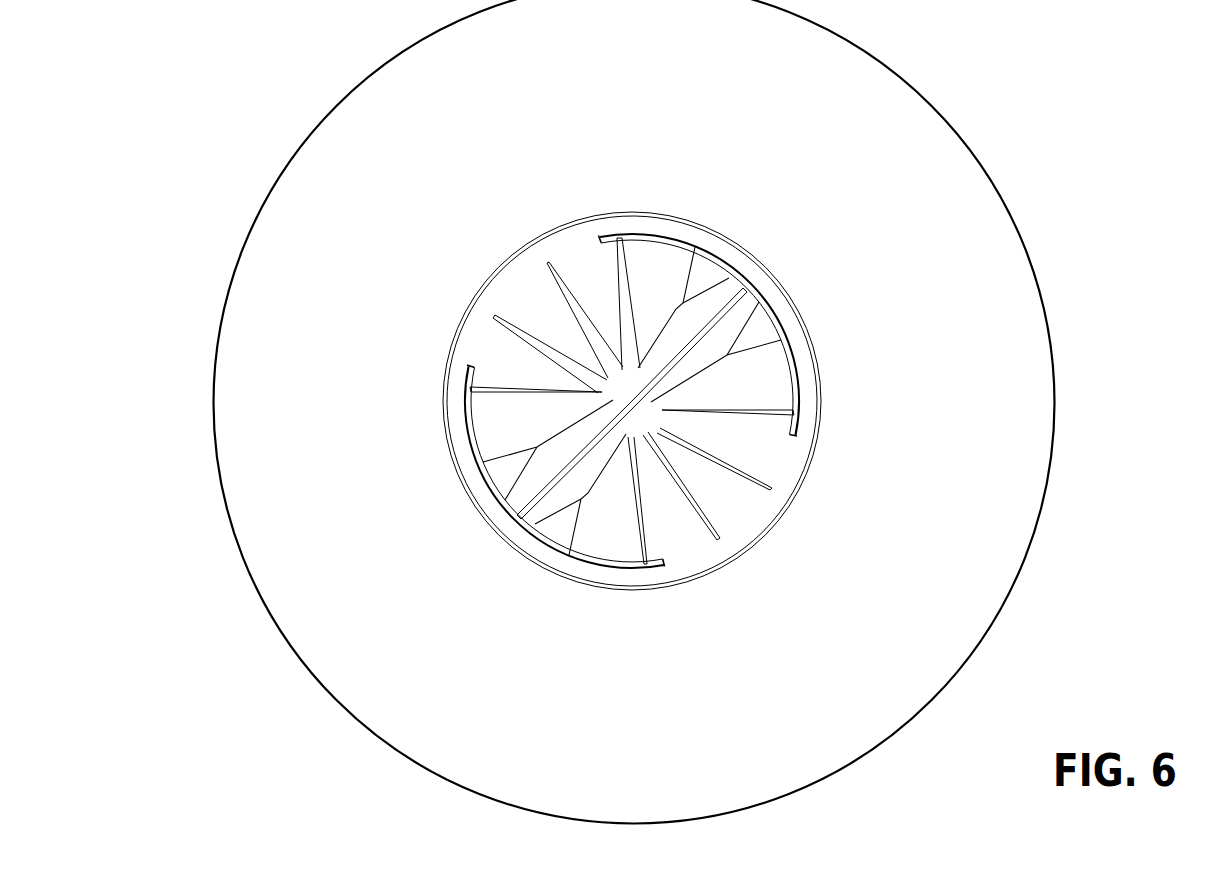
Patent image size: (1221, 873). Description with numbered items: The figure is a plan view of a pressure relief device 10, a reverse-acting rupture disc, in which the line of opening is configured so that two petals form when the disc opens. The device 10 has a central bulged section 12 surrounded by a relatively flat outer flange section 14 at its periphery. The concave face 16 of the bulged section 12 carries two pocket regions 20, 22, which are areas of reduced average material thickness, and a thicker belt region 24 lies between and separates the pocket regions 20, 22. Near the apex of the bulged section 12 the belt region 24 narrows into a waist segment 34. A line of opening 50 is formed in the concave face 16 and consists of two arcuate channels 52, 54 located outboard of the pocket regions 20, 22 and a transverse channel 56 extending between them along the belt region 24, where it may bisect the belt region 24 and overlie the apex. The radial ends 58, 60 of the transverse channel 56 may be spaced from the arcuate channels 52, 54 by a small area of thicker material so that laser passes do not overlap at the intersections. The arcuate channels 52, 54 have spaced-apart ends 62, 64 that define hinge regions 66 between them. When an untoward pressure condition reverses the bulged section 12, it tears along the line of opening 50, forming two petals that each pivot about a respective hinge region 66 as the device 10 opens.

The pressure relief device 10 is at (990, 675).
The central bulged section 12 is at (580, 247).
The outer flange section 14 is at (288, 210).
The concave face 16 is at (807, 330).
The pocket region 20 is at (556, 535).
The pocket region 22 is at (500, 483).
The belt region 24 is at (712, 300).
The waist segment 34 is at (640, 403).
The line of opening 50 is at (512, 521).
The arcuate channel 52 is at (677, 240).
The arcuate channel 54 is at (472, 450).
The transverse channel 56 is at (733, 301).
The radial end 58 is at (744, 295).
The radial end 60 is at (537, 502).
The end 62 is at (597, 237).
The end 64 is at (463, 367).
The hinge region 66 is at (515, 278).